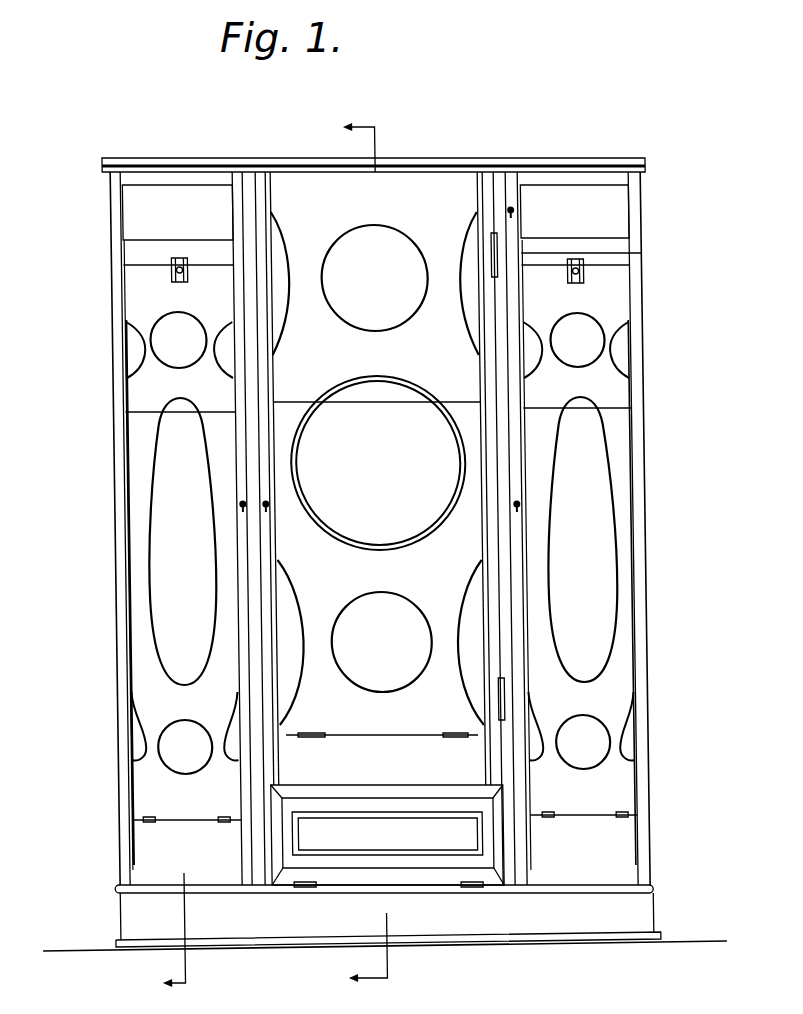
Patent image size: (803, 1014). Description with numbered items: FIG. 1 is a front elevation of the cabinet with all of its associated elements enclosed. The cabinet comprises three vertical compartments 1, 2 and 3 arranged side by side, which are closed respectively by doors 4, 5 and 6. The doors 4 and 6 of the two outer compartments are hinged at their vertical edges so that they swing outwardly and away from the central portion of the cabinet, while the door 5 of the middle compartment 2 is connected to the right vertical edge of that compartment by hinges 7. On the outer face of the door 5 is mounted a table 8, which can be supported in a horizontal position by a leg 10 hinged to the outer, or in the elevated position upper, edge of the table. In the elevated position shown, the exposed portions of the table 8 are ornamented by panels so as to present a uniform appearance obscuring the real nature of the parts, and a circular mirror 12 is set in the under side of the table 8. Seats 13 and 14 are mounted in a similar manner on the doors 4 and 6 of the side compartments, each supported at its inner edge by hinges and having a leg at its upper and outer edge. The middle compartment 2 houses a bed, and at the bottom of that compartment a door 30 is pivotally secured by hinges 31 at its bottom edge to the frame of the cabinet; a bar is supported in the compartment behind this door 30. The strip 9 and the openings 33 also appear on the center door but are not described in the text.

The vertical compartment 1 is at (203, 172).
The middle compartment 2 is at (413, 166).
The vertical compartment 3 is at (585, 172).
The door 4 is at (163, 527).
The door 5 is at (381, 642).
The door 6 is at (598, 527).
The hinges 7 is at (489, 263).
The table 8 is at (381, 478).
The shelf strip 9 is at (303, 737).
The leg 10 is at (375, 289).
The circular mirror 12 is at (378, 463).
The seat 13 is at (182, 541).
The seat 14 is at (582, 539).
The door 30 is at (387, 835).
The hinges 31 is at (295, 887).
The side opening 33 is at (276, 620).